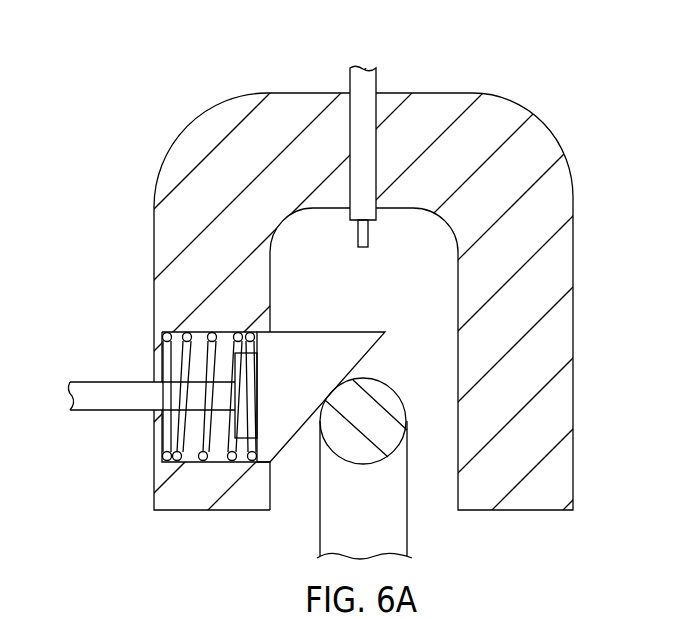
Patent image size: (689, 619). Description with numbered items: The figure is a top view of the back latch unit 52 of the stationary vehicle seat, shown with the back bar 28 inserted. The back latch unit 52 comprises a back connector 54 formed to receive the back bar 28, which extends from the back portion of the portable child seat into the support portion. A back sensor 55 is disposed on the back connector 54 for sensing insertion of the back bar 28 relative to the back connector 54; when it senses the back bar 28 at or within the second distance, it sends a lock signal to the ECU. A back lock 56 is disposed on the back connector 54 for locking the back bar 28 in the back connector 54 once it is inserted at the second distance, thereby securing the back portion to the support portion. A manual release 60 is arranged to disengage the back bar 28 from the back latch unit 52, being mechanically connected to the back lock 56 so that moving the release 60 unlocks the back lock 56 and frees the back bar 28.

The back bar 28 is at (352, 508).
The back latch unit 52 is at (197, 80).
The back connector 54 is at (275, 100).
The back sensor 55 is at (370, 78).
The back lock 56 is at (287, 378).
The manual release 60 is at (103, 393).